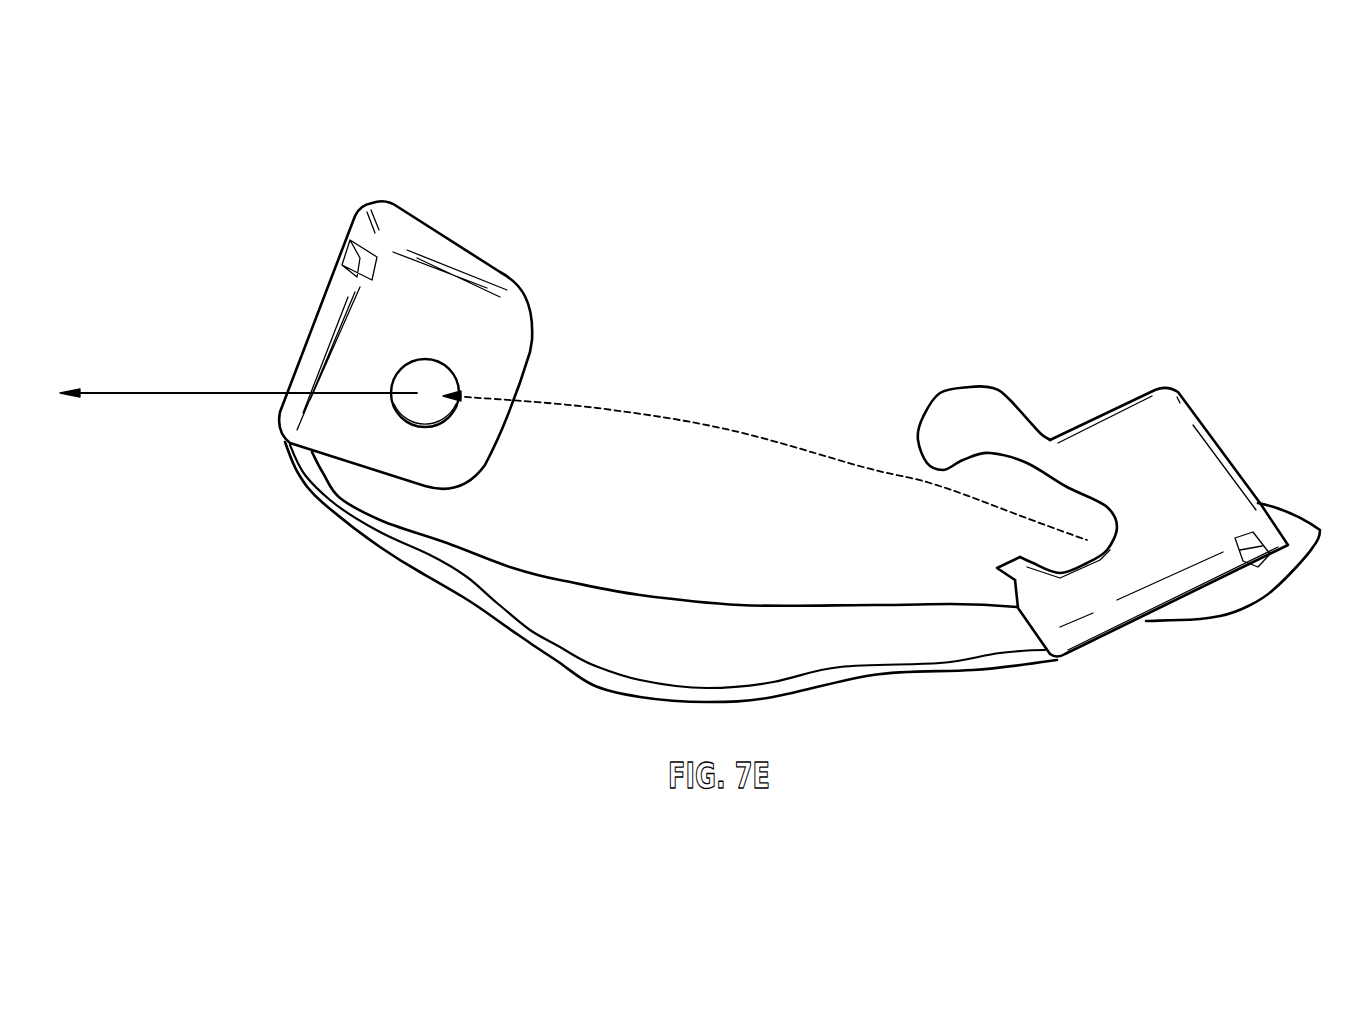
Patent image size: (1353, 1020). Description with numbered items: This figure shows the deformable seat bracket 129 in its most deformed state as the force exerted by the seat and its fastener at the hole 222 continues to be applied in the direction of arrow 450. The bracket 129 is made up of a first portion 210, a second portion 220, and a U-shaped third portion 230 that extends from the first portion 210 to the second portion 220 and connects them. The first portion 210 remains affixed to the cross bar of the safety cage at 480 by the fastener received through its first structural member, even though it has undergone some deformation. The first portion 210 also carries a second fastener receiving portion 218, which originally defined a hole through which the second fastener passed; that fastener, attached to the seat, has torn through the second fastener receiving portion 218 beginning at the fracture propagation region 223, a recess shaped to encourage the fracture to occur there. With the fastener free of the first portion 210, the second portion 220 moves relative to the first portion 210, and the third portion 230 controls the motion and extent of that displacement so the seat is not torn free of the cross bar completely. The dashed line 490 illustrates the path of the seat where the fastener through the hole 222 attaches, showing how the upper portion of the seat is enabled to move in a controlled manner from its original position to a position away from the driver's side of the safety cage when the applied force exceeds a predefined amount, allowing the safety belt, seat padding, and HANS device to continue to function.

The seat bracket 129 is at (272, 146).
The second portion 220 is at (450, 189).
The hole 222 is at (438, 369).
The arrow 450 is at (238, 410).
The dashed line 490 is at (765, 465).
The third portion 230 is at (507, 657).
The first portion 210 is at (1284, 657).
The second fastener receiving portion 218 is at (1138, 460).
The fracture propagation region 223 is at (1015, 597).
The location on safety frame 480 is at (1160, 627).